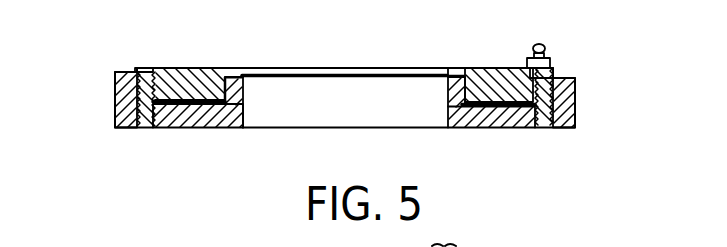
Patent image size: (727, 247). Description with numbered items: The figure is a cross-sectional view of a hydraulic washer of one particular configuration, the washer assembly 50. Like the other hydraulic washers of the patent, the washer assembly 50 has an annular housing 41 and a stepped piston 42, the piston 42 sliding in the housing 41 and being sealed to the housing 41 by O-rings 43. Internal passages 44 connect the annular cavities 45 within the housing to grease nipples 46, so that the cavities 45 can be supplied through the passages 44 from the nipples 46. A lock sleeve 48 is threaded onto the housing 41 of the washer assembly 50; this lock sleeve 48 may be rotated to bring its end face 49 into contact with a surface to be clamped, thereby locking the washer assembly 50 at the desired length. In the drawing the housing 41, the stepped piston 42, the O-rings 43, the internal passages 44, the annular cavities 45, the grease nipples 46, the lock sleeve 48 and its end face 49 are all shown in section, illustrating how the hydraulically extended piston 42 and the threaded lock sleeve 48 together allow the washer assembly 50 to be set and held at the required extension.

The annular housing 41 is at (150, 68).
The stepped piston 42 is at (179, 127).
The O-rings 43 is at (222, 98).
The internal passages 44 is at (573, 78).
The annular cavities 45 is at (503, 108).
The grease nipples 46 is at (535, 46).
The lock sleeve 48 is at (575, 108).
The end face 49 is at (123, 132).
The washer assembly 50 is at (357, 65).